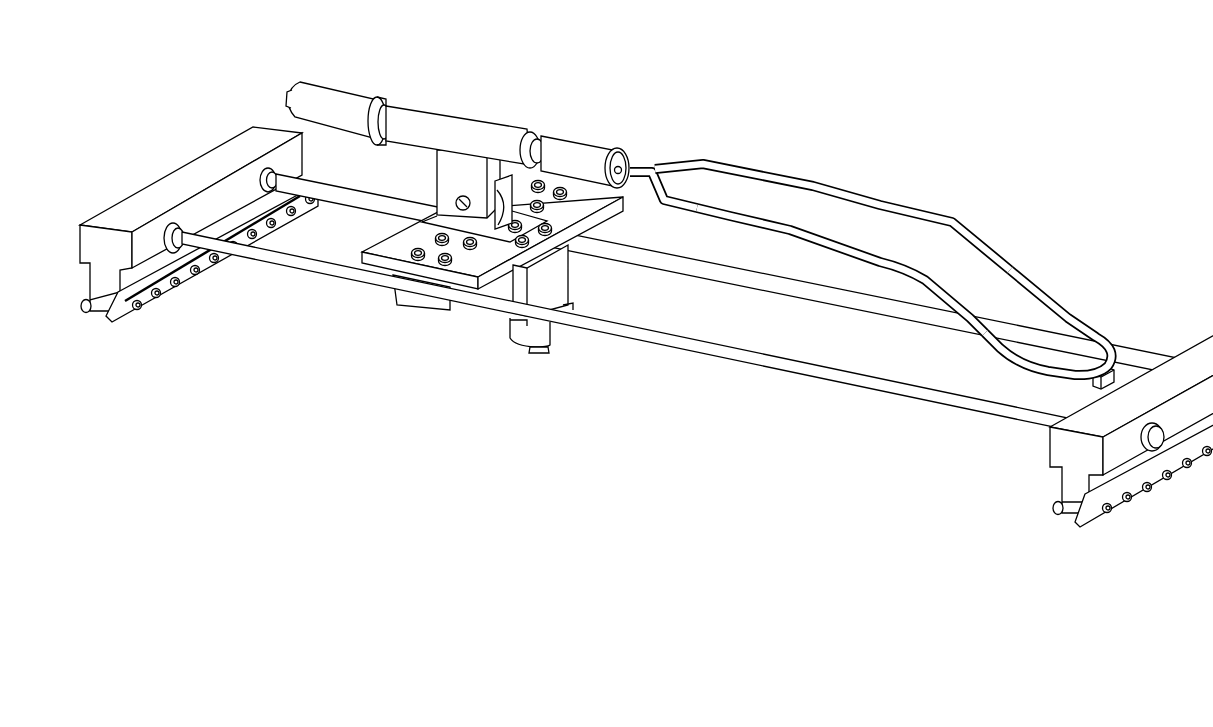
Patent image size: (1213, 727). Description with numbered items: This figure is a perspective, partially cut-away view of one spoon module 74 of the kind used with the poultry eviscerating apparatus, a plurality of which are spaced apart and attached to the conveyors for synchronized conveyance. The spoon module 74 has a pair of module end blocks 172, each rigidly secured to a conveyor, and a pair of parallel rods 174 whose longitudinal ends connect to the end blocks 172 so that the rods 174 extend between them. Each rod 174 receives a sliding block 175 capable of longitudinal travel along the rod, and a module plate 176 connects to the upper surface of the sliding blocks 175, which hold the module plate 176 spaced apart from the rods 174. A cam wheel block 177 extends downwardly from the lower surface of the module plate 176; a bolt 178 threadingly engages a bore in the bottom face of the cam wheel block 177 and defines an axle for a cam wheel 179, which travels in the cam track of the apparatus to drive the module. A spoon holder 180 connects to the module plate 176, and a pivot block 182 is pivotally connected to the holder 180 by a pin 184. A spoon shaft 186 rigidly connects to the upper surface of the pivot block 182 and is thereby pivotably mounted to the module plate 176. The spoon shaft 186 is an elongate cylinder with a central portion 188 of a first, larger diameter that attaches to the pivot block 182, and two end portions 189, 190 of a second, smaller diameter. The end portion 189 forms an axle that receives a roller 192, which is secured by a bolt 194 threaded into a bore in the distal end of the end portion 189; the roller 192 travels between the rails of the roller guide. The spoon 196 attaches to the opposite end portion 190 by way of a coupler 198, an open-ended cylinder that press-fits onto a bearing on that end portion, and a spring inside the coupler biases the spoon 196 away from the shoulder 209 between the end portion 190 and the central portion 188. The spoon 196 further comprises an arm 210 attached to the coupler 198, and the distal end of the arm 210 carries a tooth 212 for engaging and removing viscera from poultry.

The spoon module 74 is at (688, 48).
The module end blocks 172 is at (145, 195).
The parallel rods 174 is at (760, 357).
The sliding block 175 is at (422, 300).
The module plate 176 is at (393, 247).
The cam wheel block 177 is at (543, 282).
The bolt 178 is at (532, 354).
The cam wheel 179 is at (553, 328).
The spoon holder 180 is at (623, 213).
The pivot block 182 is at (432, 180).
The pin 184 is at (458, 200).
The spoon shaft 186 is at (440, 110).
The central portion 188 is at (448, 128).
The end portion 189 is at (388, 108).
The end portion 190 is at (563, 137).
The roller 192 is at (341, 90).
The bolt 194 is at (291, 98).
The spoon 196 is at (918, 182).
The coupler 198 is at (640, 160).
The shoulder 209 is at (531, 134).
The arm 210 is at (1027, 278).
The tooth 212 is at (1130, 370).